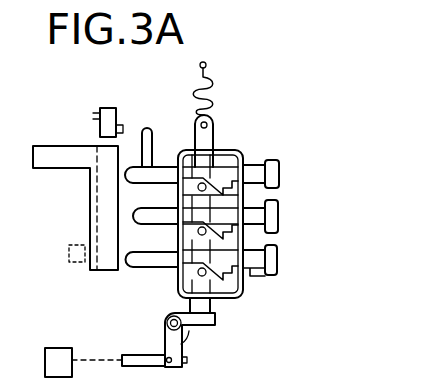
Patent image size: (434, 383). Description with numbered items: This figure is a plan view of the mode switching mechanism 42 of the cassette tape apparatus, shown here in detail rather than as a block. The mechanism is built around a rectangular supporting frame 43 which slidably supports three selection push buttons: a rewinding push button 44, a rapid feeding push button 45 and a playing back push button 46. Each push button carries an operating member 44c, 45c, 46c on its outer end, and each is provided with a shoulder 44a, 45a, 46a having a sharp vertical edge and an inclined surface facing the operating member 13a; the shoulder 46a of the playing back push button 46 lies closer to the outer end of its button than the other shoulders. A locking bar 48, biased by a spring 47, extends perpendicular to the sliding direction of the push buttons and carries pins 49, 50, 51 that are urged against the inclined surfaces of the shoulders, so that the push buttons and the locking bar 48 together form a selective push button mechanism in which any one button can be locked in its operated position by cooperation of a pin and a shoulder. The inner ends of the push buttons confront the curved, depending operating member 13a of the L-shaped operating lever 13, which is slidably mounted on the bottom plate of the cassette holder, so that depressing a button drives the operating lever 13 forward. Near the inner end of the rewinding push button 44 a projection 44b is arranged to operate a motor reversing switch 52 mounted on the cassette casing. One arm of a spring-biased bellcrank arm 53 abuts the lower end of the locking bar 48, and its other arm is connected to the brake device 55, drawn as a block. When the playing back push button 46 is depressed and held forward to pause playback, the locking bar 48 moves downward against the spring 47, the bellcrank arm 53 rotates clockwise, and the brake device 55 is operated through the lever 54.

The operating lever 13 is at (48, 152).
The operating member 13a is at (118, 252).
The motor reversing switch 52 is at (108, 116).
The projection 44b is at (150, 131).
The spring 47 is at (207, 83).
The locking bar 48 is at (208, 130).
The rewinding push button 44 is at (250, 172).
The operating member 44c is at (279, 167).
The shoulder 44a is at (245, 185).
The mode switching mechanism 42 is at (354, 226).
The operating member 45c is at (279, 208).
The rapid feeding push button 45 is at (245, 237).
The shoulder 45a is at (245, 240).
The playing back push button 46 is at (265, 258).
The operating member 46c is at (278, 266).
The shoulder 46a is at (262, 277).
The pin 49 is at (198, 188).
The pin 50 is at (198, 233).
The pin 51 is at (198, 273).
The supporting frame 43 is at (229, 299).
The bellcrank arm 53 is at (176, 345).
The lever 54 is at (135, 357).
The brake device 55 is at (52, 358).